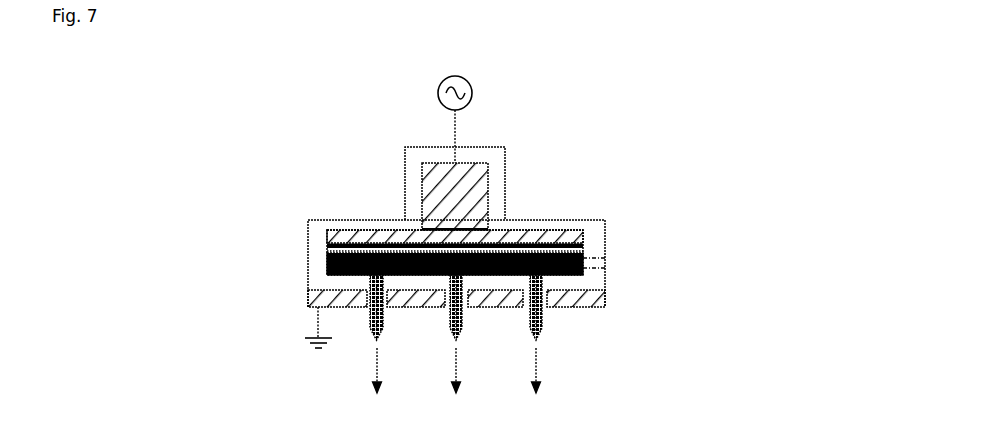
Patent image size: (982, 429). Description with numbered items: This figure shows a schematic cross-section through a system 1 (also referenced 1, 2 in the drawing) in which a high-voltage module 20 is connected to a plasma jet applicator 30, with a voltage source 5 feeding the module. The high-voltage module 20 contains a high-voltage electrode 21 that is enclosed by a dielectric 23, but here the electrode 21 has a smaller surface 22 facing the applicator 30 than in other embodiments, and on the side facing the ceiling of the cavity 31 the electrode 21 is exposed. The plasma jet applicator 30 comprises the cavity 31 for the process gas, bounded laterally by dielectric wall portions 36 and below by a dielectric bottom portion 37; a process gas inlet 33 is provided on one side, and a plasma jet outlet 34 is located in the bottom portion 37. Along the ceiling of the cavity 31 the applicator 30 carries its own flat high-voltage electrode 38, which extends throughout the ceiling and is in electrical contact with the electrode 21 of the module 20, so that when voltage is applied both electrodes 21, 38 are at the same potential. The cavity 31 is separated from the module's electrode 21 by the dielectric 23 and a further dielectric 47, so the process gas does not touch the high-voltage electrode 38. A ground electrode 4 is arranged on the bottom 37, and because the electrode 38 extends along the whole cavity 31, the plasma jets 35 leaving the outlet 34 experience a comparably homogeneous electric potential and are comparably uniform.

The system 1 is at (447, 241).
The plasma treatment device 2 is at (447, 241).
The ground electrode 4 is at (343, 298).
The high-frequency voltage source 5 is at (470, 85).
The high-voltage module 20 is at (456, 142).
The high-voltage electrode 21 is at (437, 177).
The surface 22 is at (463, 227).
The dielectric 23 is at (413, 195).
The plasma jet applicator 30 is at (423, 271).
The cavity 31 is at (530, 250).
The process gas inlet 33 is at (595, 258).
The plasma jet outlet 34 is at (532, 352).
The plasma jets 35 is at (535, 283).
The wall portions 36 is at (318, 267).
The bottom portion 37 is at (553, 277).
The high-voltage electrode 38 is at (397, 239).
The dielectric 47 is at (383, 246).